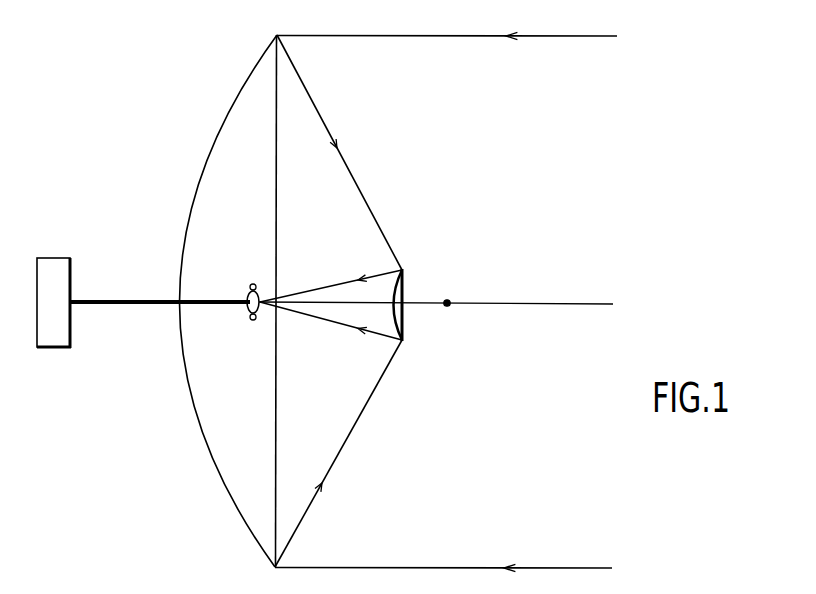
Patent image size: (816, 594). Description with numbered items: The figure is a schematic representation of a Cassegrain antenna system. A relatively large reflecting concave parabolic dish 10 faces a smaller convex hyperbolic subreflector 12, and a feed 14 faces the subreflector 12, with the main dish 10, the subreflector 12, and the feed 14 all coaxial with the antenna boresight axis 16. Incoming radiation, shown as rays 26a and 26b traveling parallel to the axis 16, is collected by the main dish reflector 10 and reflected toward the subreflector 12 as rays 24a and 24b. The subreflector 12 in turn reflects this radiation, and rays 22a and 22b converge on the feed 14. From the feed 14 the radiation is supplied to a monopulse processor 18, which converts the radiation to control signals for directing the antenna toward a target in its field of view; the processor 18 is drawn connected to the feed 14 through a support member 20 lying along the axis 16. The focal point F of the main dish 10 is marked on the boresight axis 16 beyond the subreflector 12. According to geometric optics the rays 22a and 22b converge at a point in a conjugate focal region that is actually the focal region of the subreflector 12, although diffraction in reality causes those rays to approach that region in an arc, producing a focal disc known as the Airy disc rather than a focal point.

The parabolic dish 10 is at (251, 186).
The hyperbolic subreflector 12 is at (405, 297).
The feed 14 is at (246, 307).
The antenna boresight axis 16 is at (527, 305).
The monopulse processor 18 is at (61, 312).
The support rod 20 is at (117, 300).
The ray 22a is at (338, 273).
The ray 22b is at (318, 323).
The ray 24a is at (362, 193).
The ray 24b is at (355, 425).
The ray 26a is at (411, 37).
The ray 26b is at (382, 567).
The focal point of primary reflector F is at (449, 300).